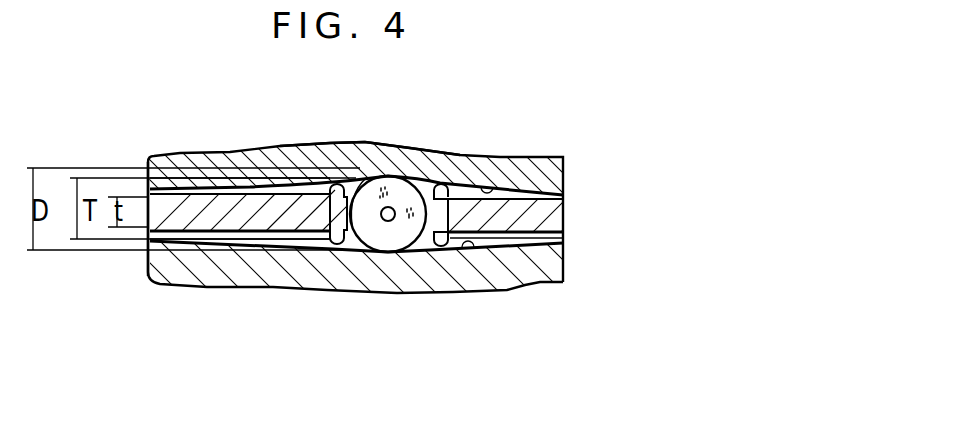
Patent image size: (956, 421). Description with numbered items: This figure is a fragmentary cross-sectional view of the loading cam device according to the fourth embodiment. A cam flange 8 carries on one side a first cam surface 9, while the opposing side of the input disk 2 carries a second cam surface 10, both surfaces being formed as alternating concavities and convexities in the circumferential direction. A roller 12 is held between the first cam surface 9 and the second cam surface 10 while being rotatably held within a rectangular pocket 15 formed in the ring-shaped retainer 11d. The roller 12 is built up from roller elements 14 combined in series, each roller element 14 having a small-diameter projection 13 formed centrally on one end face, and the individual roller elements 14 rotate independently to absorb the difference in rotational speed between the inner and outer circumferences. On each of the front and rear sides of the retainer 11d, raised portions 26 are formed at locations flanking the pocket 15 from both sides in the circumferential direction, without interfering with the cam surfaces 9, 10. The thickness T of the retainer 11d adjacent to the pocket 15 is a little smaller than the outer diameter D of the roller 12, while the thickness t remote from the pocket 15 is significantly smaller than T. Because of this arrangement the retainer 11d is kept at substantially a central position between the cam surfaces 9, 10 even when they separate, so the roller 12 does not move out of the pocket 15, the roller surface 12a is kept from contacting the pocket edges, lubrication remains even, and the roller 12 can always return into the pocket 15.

The input disk 2 is at (540, 267).
The cam flange 8 is at (550, 156).
The first cam surface 9 is at (498, 158).
The second cam surface 10 is at (492, 262).
The retainer 11d is at (548, 216).
The roller 12 is at (355, 250).
The roller surface 12a is at (415, 150).
The small-diameter projection 13 is at (388, 222).
The roller element 14 is at (408, 237).
The pocket 15 is at (353, 151).
The raised portion 26 is at (442, 181).